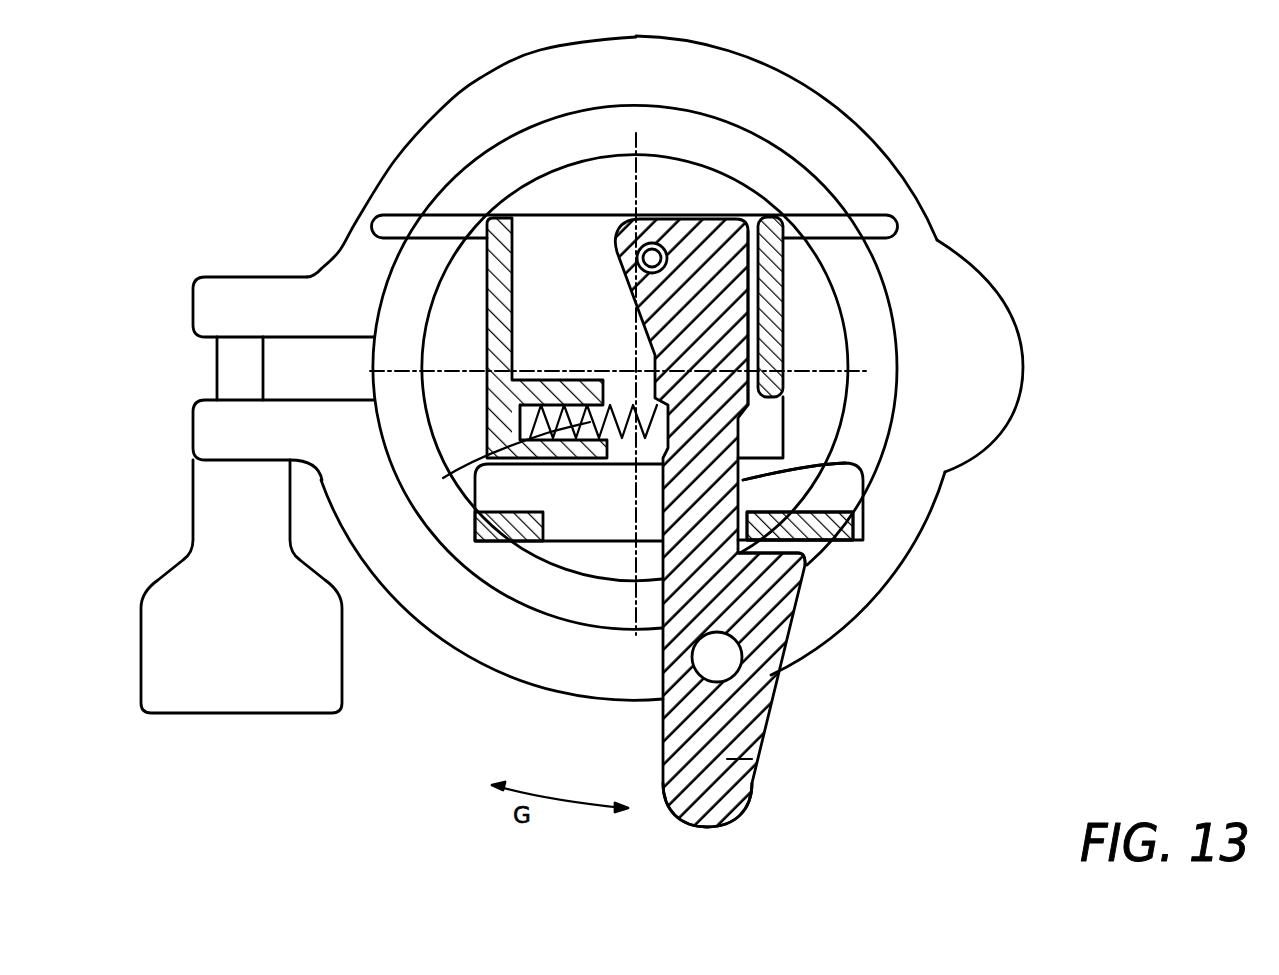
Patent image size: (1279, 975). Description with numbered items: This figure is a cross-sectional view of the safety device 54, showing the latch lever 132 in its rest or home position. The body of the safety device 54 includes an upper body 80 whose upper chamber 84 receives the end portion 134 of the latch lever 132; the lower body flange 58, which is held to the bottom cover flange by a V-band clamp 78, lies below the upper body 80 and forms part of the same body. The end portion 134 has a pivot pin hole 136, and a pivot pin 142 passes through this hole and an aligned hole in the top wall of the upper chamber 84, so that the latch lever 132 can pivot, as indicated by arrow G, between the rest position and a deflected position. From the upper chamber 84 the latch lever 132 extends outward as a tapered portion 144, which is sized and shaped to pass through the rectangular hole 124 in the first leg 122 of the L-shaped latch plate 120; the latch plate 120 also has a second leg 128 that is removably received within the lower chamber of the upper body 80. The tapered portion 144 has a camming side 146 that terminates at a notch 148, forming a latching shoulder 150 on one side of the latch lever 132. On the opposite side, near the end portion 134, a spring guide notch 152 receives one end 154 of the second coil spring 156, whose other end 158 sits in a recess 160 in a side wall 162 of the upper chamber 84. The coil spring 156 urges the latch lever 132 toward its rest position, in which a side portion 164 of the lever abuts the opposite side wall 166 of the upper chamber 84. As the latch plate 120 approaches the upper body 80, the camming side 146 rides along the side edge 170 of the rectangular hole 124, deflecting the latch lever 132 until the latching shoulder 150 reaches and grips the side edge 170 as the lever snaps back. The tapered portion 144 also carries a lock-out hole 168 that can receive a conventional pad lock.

The safety device 54 is at (1052, 684).
The lower body flange 58 is at (660, 218).
The V-band clamp 78 is at (702, 72).
The upper body 80 is at (490, 268).
The upper chamber 84 is at (497, 213).
The L-shaped latch plate 120 is at (592, 551).
The first leg 122 is at (473, 536).
The rectangular hole 124 is at (575, 464).
The second leg 128 is at (860, 467).
The latch lever 132 is at (783, 433).
The end portion 134 is at (803, 202).
The pivot pin hole 136 is at (616, 219).
The pivot pin 142 is at (735, 205).
The tapered portion 144 is at (755, 765).
The camming side 146 is at (771, 704).
The notch 148 is at (753, 483).
The latching shoulder 150 is at (790, 551).
The spring guide notch 152 is at (637, 458).
The one end of second coil spring 154 is at (618, 458).
The second coil spring 156 is at (608, 432).
The other end of coil spring 158 is at (421, 400).
The recess 160 is at (557, 527).
The side wall 162 is at (467, 318).
The side portion 164 is at (723, 303).
The opposite side wall 166 is at (783, 343).
The lock-out hole 168 is at (720, 655).
The side edge 170 is at (830, 470).